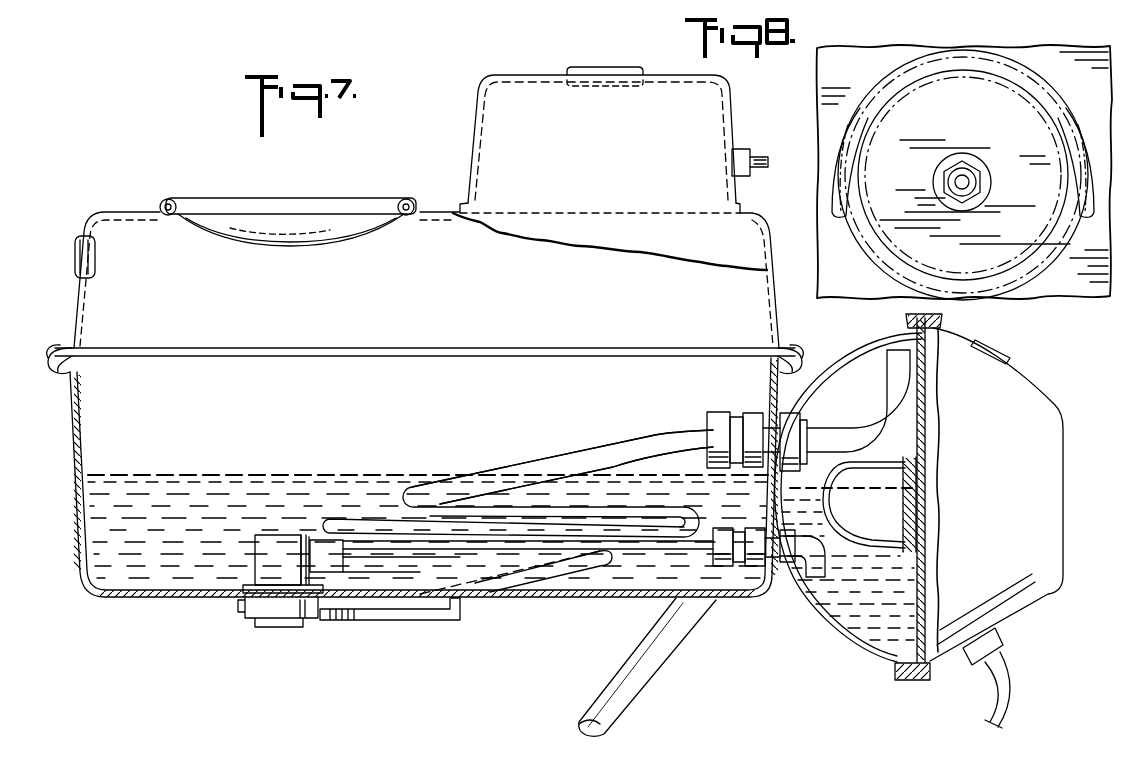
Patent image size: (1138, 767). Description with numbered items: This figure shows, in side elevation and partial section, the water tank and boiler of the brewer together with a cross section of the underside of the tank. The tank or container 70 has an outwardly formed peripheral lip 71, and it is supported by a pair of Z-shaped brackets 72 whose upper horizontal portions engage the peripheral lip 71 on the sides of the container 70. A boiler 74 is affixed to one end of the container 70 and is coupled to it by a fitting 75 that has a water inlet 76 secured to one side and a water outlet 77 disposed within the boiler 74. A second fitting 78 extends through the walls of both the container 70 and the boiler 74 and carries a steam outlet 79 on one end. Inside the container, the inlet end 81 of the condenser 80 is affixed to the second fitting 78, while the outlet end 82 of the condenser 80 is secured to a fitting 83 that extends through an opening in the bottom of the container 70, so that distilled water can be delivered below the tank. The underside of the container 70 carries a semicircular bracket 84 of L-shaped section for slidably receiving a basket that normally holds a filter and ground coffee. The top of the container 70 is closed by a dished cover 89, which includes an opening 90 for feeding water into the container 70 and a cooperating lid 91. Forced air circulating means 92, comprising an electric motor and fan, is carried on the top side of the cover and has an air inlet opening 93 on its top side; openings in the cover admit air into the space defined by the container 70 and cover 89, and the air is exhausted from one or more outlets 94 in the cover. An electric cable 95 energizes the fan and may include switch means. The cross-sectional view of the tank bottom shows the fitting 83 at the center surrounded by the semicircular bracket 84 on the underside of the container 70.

In FIG. 7, the container 70 is at (76, 432).
In FIG. 8, the container 70 is at (1060, 58).
In FIG. 7, the peripheral lip 71 is at (63, 374).
In FIG. 7, the Z-shaped bracket 72 is at (634, 652).
In FIG. 7, the boiler 74 is at (807, 632).
In FIG. 7, the fitting 75 is at (750, 512).
In FIG. 7, the water inlet 76 is at (650, 560).
In FIG. 7, the water outlet 77 is at (828, 566).
In FIG. 7, the second fitting 78 is at (756, 399).
In FIG. 7, the steam outlet 79 is at (866, 420).
In FIG. 7, the condenser 80 is at (474, 477).
In FIG. 7, the inlet end 81 is at (664, 434).
In FIG. 7, the outlet end 82 is at (385, 560).
In FIG. 7, the fitting 83 is at (290, 576).
In FIG. 8, the fitting 83 is at (962, 164).
In FIG. 7, the semicircular bracket 84 is at (444, 620).
In FIG. 8, the semicircular bracket 84 is at (1082, 126).
In FIG. 7, the dished cover 89 is at (131, 200).
In FIG. 7, the opening 90 is at (168, 216).
In FIG. 7, the lid 91 is at (388, 200).
In FIG. 7, the forced air circulating means 92 is at (540, 73).
In FIG. 7, the air inlet opening 93 is at (602, 68).
In FIG. 7, the outlet 94 is at (96, 256).
In FIG. 7, the electric cable 95 is at (758, 156).